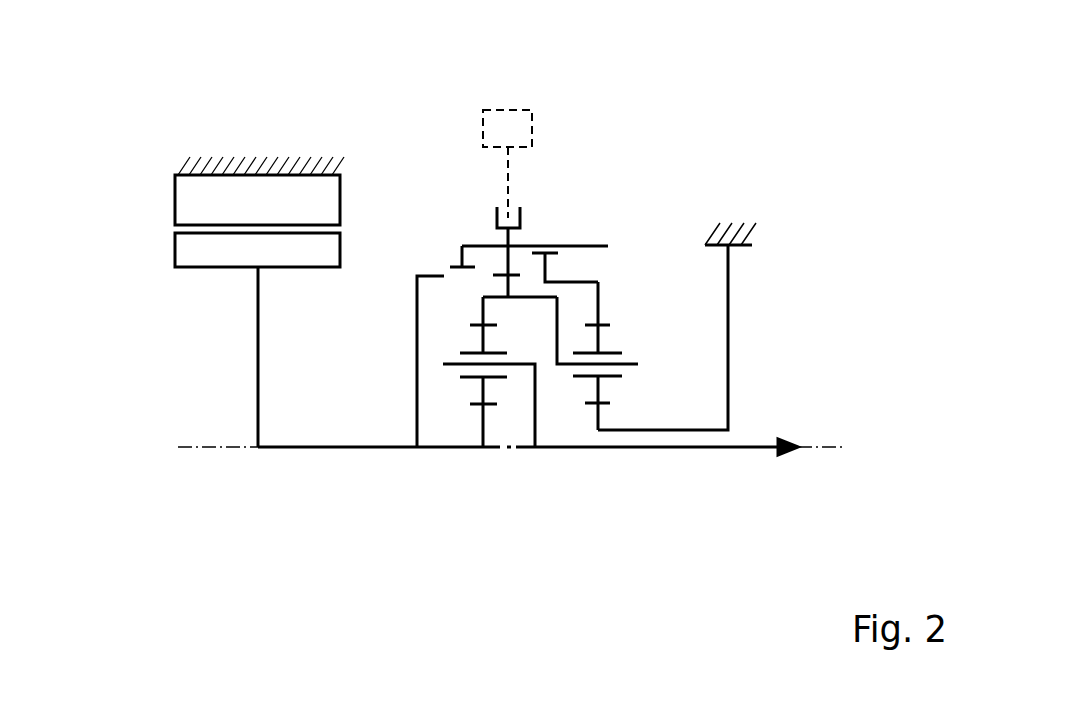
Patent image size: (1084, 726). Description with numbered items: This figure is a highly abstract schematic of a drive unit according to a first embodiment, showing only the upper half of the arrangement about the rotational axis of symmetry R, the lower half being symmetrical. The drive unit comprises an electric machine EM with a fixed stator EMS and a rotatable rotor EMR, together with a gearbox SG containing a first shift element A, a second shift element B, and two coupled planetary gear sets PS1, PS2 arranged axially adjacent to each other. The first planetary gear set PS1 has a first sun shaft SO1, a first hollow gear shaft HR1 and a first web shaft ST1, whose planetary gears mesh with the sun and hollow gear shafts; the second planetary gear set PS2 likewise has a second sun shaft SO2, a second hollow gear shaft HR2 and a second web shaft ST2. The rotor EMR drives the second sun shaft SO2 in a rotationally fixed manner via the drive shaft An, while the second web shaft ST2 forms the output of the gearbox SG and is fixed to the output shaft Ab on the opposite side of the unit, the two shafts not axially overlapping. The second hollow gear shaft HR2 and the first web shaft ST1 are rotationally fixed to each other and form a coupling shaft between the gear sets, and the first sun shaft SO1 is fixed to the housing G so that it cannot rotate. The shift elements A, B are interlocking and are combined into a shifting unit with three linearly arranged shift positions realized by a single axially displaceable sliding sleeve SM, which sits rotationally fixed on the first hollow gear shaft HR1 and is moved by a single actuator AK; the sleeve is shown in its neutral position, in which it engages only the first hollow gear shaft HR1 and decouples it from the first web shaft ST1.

The electric machine EM is at (198, 302).
The stator EMS is at (187, 202).
The rotor EMR is at (187, 248).
The second shift element B is at (418, 249).
The first shift element A is at (500, 257).
The actuator AK is at (510, 93).
The sliding sleeve SM is at (534, 204).
The gearbox SG is at (631, 124).
The housing G is at (748, 205).
The first planetary gear set PS1 is at (746, 416).
The first hollow gear shaft HR1 is at (598, 307).
The first web shaft ST1 is at (628, 358).
The first sun shaft SO1 is at (598, 413).
The second planetary gear set PS2 is at (400, 453).
The second hollow gear shaft HR2 is at (482, 310).
The second web shaft ST2 is at (453, 365).
The second sun shaft SO2 is at (482, 420).
The rotational axis of symmetry R is at (220, 448).
The drive shaft An is at (287, 448).
The output shaft Ab is at (723, 450).